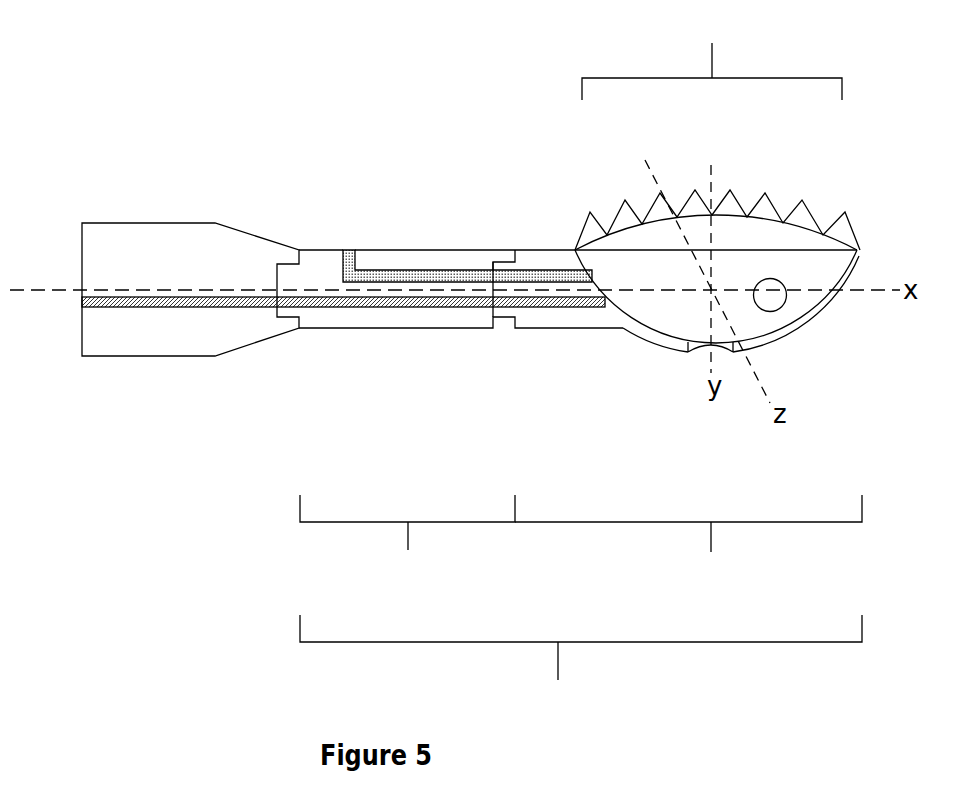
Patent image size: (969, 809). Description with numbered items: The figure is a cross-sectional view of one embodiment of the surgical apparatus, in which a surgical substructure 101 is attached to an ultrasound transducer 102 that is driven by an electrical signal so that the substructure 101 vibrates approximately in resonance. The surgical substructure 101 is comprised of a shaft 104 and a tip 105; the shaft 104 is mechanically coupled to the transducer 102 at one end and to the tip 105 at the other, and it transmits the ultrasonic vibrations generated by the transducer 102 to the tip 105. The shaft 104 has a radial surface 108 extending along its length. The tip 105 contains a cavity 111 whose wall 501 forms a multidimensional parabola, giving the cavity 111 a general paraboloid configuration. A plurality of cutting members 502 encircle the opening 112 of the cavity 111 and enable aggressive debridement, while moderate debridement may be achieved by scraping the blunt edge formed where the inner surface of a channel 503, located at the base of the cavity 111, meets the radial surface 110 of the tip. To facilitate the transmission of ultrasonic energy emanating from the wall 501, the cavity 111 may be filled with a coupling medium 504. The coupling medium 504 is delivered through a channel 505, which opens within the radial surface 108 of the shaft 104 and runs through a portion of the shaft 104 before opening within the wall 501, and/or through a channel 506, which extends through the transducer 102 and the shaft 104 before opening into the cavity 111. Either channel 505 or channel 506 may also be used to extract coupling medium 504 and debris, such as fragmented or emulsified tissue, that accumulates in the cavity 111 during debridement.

The surgical substructure 101 is at (581, 665).
The ultrasound transducer 102 is at (170, 285).
The shaft 104 is at (407, 540).
The tip 105 is at (688, 540).
The radial surface 108 is at (387, 248).
The radial surface 110 is at (643, 343).
The cavity 111 is at (727, 243).
The opening 112 is at (712, 55).
The wall 501 is at (773, 325).
The cutting members 502 is at (675, 212).
The channel 503 is at (707, 345).
The coupling medium 504 is at (775, 299).
The channel 505 is at (342, 257).
The channel 506 is at (150, 302).